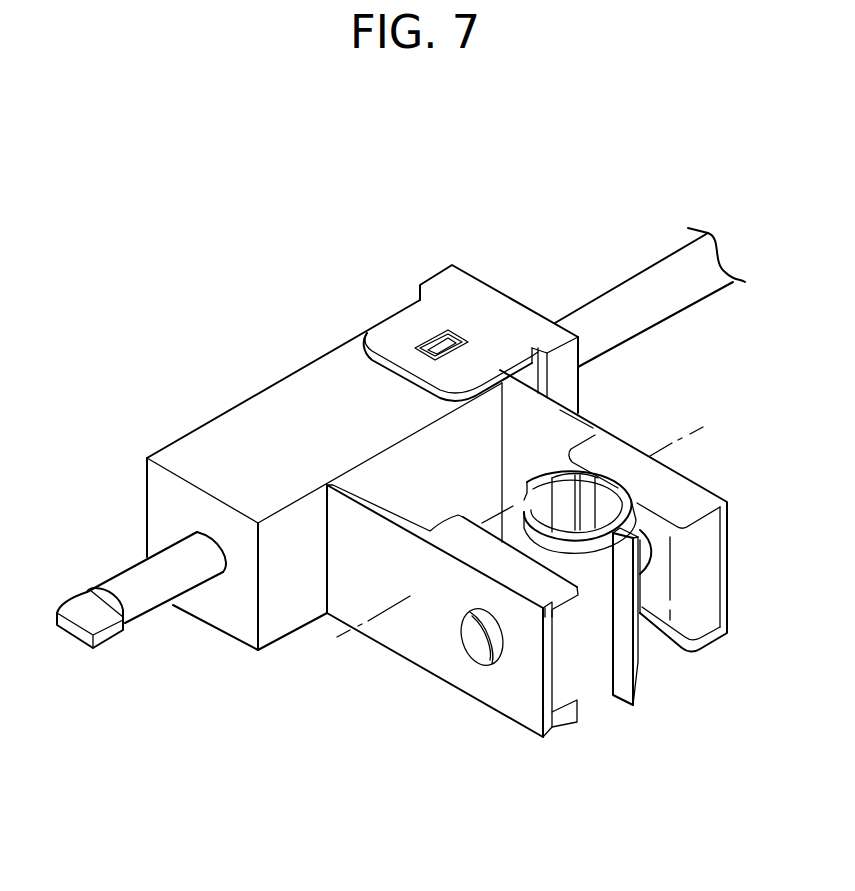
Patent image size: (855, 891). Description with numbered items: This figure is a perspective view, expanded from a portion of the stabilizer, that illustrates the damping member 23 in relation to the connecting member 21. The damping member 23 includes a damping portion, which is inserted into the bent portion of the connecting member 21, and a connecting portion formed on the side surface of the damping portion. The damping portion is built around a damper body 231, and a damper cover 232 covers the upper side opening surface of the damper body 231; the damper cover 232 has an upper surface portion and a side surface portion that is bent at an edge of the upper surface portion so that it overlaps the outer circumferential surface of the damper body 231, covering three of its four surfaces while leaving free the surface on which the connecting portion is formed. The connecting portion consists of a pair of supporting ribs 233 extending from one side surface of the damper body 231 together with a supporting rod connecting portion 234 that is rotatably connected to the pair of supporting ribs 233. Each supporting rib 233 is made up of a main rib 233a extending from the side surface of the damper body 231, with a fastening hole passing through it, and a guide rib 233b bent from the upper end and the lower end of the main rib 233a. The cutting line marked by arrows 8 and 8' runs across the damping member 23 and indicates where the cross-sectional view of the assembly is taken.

The damping member 23 is at (271, 250).
The connecting member 21 is at (622, 300).
The damper body 231 is at (246, 426).
The damper cover 232 is at (472, 296).
The supporting ribs 233 is at (610, 850).
The main rib 233a is at (493, 688).
The guide rib 233b is at (563, 602).
The supporting rod connecting portion 234 is at (610, 478).
The section line 8-8' 8 is at (371, 657).
The section line 8- 8' is at (688, 461).